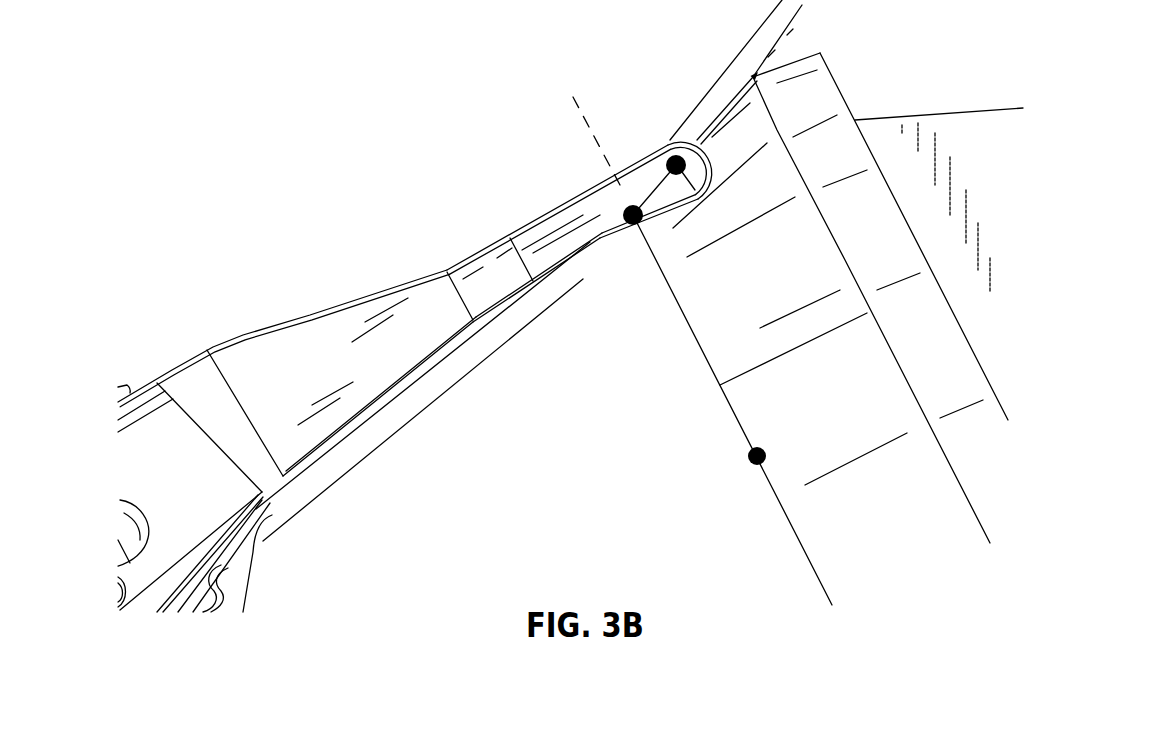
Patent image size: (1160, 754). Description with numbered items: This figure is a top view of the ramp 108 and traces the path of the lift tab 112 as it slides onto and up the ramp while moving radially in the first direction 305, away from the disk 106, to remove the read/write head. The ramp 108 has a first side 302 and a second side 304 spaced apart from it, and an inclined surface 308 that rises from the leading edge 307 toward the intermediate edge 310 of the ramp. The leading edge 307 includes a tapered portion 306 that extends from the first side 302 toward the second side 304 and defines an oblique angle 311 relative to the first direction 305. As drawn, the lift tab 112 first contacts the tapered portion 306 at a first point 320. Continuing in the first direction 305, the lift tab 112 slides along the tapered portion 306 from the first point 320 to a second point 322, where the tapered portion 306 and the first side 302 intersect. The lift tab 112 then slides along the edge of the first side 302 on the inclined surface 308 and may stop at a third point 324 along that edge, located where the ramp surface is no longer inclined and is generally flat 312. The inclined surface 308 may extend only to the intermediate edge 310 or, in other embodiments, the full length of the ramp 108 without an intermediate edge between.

The disk 106 is at (354, 362).
The ramp 108 is at (936, 328).
The lift tab 112 is at (573, 231).
The first side 302 is at (686, 362).
The second side 304 is at (785, 135).
The first direction 305 is at (576, 100).
The tapered portion 306 is at (700, 119).
The leading edge 307 is at (652, 62).
The inclined surface 308 is at (770, 244).
The intermediate edge 310 is at (808, 346).
The oblique angle 311 is at (660, 176).
The generally flat ramp surface 312 is at (856, 473).
The first point 320 is at (677, 153).
The second point 322 is at (630, 220).
The third point 324 is at (756, 462).